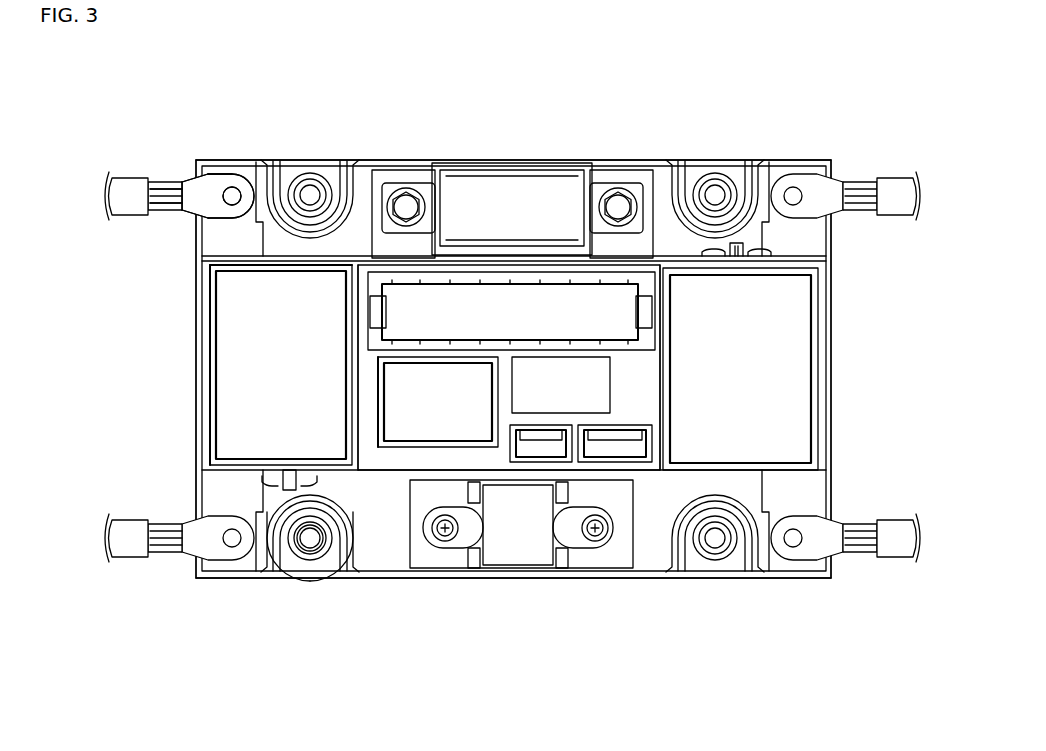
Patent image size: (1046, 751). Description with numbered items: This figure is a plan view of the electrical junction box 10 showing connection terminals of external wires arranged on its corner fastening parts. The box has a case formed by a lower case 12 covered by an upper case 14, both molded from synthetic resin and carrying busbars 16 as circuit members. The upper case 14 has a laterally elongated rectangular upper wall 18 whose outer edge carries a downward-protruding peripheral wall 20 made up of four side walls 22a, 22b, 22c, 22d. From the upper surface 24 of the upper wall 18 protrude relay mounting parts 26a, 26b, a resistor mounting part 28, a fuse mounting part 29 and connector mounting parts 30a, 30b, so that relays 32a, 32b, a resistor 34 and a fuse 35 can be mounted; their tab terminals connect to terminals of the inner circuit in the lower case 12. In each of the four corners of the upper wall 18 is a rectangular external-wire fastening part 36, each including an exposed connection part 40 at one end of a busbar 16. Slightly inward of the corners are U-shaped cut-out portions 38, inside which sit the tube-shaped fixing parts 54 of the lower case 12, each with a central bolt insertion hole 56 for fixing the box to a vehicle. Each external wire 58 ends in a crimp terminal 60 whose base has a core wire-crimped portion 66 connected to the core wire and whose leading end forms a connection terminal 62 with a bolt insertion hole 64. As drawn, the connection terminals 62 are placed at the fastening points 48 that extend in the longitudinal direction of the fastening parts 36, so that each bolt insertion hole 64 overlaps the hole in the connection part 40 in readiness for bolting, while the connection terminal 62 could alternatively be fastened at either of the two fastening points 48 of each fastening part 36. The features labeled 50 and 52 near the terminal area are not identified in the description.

The electrical junction box 10 is at (520, 58).
The lower case 12 is at (333, 566).
The upper case 14 is at (490, 572).
The busbars 16 is at (340, 266).
The upper wall 18 is at (648, 378).
The peripheral wall 20 is at (200, 322).
The side wall 22a is at (198, 290).
The side wall 22b is at (598, 572).
The side wall 22c is at (832, 380).
The side wall 22d is at (258, 168).
The upper surface 24 is at (670, 405).
The relay mounting part 26a is at (210, 350).
The relay mounting part 26b is at (470, 360).
The resistor mounting part 28 is at (512, 345).
The fuse mounting part 29 is at (448, 178).
The connector mounting part 30a is at (522, 457).
The connector mounting part 30b is at (632, 458).
The relay 32a is at (235, 414).
The relay 32b is at (410, 405).
The resistor 34 is at (412, 312).
The fuse 35 is at (500, 208).
The external-wire fastening part 36 is at (226, 150).
The cut-out portion 38 is at (270, 562).
The connection part 40 is at (222, 254).
The fastening point 48 is at (145, 196).
The terminal plate 50 is at (212, 172).
The terminal edge 52 is at (226, 172).
The fixing part 54 is at (312, 563).
The bolt insertion hole 56 is at (300, 546).
The external wire 58 is at (130, 160).
The crimp terminal 60 is at (177, 235).
The connection terminal 62 is at (205, 200).
The bolt insertion hole 64 is at (238, 190).
The core wire-crimped portion 66 is at (162, 200).